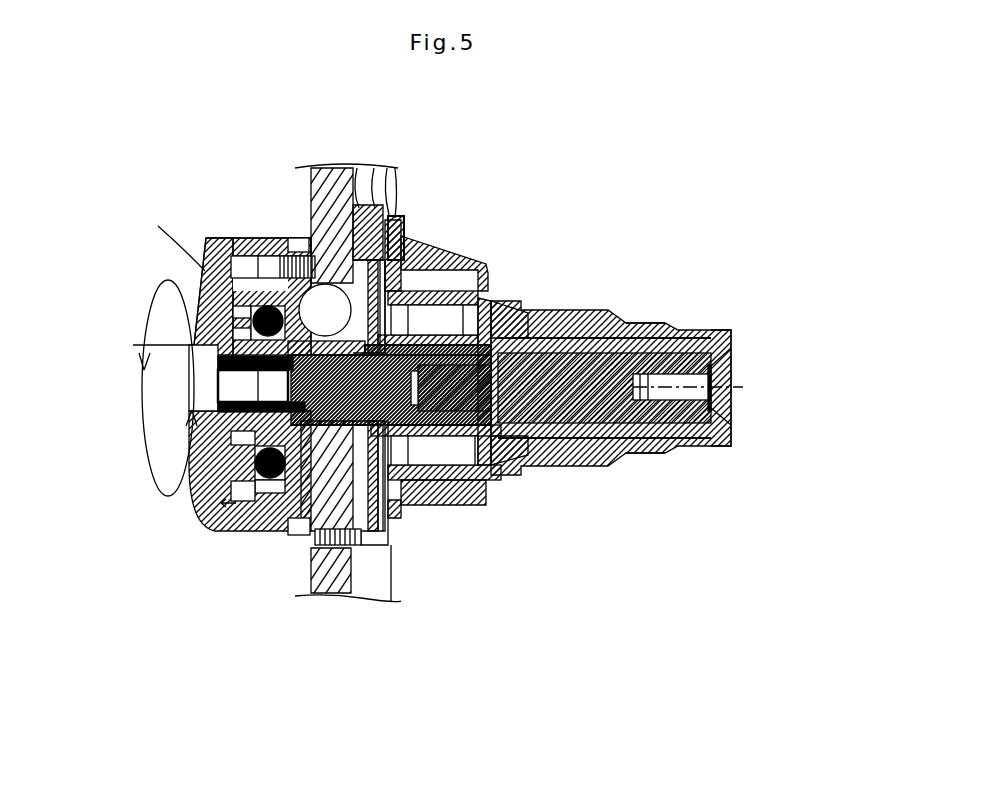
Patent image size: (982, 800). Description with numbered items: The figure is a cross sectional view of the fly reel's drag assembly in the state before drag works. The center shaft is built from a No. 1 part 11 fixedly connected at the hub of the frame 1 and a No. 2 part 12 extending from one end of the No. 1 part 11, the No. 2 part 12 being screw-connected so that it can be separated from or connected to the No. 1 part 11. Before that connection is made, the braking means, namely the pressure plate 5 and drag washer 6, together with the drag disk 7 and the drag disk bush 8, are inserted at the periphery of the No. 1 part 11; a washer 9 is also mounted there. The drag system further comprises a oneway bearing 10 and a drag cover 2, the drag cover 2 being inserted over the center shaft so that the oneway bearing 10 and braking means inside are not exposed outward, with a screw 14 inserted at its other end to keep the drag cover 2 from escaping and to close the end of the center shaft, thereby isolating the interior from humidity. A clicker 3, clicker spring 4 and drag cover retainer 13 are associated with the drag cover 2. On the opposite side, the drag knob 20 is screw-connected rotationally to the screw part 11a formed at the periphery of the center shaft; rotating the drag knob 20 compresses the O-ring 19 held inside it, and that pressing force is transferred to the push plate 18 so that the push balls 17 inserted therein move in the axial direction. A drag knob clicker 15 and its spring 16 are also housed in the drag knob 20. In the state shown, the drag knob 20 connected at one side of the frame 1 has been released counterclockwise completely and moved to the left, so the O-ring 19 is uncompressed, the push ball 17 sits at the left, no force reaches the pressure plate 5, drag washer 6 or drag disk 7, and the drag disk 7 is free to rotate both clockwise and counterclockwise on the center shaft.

The frame 1 is at (303, 542).
The drag cover 2 is at (570, 445).
The clicker 3 is at (383, 535).
The clicker spring 4 is at (340, 540).
The pressure plate 5 is at (355, 232).
The drag washer 6 is at (367, 230).
The drag disk 7 is at (381, 215).
The drag disk bush 8 is at (462, 310).
The washer 9 is at (510, 300).
The oneway bearing 10 is at (483, 312).
The No. 1 part 11 is at (396, 428).
The screw part 11a is at (205, 392).
The No. 2 part 12 is at (632, 315).
The drag cover retainer 13 is at (735, 320).
The screw 14 is at (727, 376).
The drag knob clicker 15 is at (207, 230).
The spring 16 is at (255, 230).
The push ball 17 is at (317, 293).
The push plate 18 is at (200, 524).
The O-ring 19 is at (198, 480).
The drag knob 20 is at (197, 263).